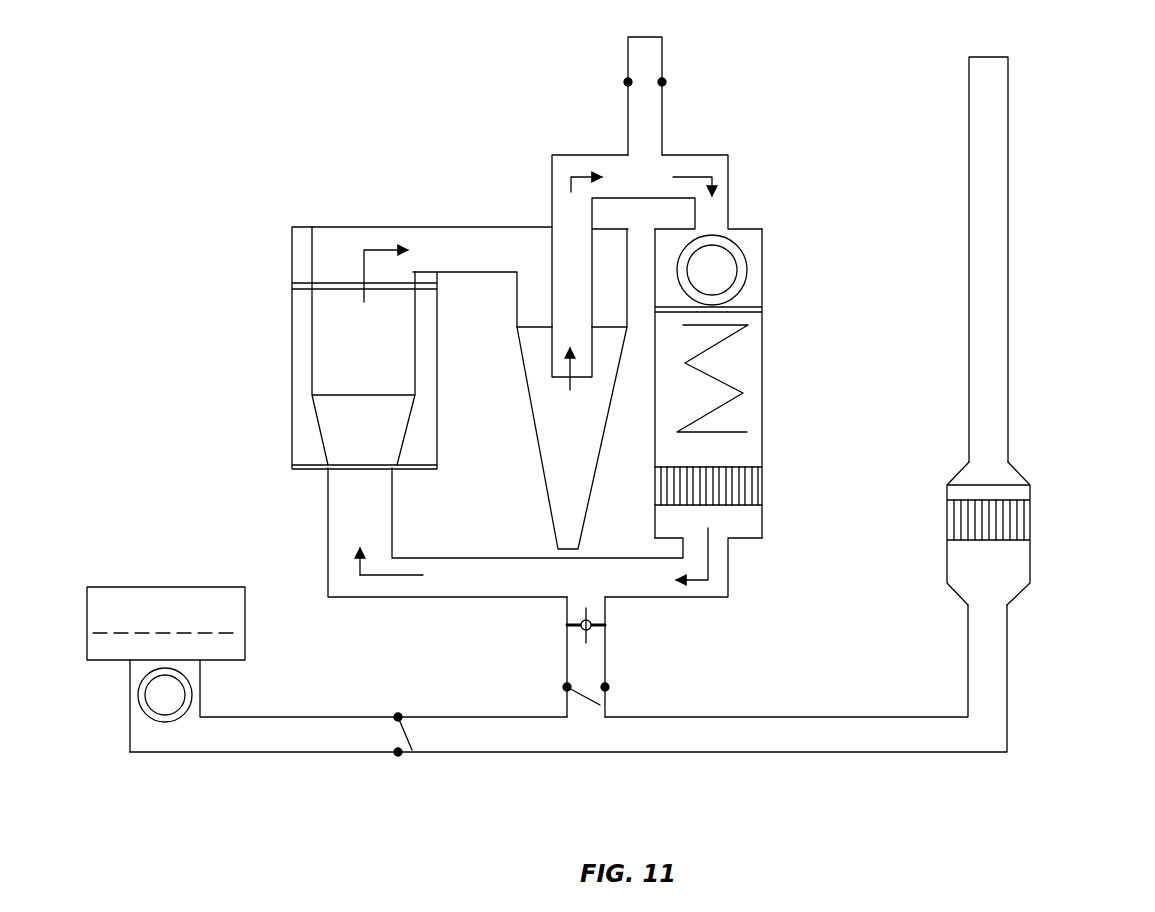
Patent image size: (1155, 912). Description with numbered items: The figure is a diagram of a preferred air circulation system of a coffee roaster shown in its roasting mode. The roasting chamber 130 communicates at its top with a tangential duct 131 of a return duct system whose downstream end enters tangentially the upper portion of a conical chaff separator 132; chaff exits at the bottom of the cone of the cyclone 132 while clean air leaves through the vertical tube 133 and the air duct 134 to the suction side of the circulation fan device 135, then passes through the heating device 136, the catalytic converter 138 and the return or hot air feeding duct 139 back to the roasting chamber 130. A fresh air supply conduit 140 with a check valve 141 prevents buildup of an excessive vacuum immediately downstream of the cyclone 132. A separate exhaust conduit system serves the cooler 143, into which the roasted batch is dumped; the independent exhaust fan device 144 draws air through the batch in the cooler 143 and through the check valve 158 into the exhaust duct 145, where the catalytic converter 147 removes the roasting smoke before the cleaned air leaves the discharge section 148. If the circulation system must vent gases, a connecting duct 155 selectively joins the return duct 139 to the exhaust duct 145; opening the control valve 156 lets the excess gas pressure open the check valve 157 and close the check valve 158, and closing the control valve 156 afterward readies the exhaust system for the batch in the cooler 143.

The roasting chamber 130 is at (389, 360).
The tangential duct 131 is at (481, 243).
The conical chaff separator 132 is at (527, 474).
The vertical tube 133 is at (548, 292).
The air duct 134 is at (573, 155).
The circulation fan device 135 is at (713, 268).
The heating device 136 is at (762, 382).
The catalytic converter 138 is at (762, 483).
The return duct 139 is at (467, 583).
The fresh air supply conduit 140 is at (664, 53).
The check valve 141 is at (662, 82).
The cooler 143 is at (190, 625).
The exhaust fan device 144 is at (172, 695).
The exhaust duct 145 is at (742, 733).
The catalytic converter 147 is at (1032, 520).
The discharge section 148 is at (1016, 290).
The connecting duct 155 is at (567, 652).
The control valve 156 is at (602, 627).
The check valve 157 is at (605, 712).
The check valve 158 is at (407, 738).